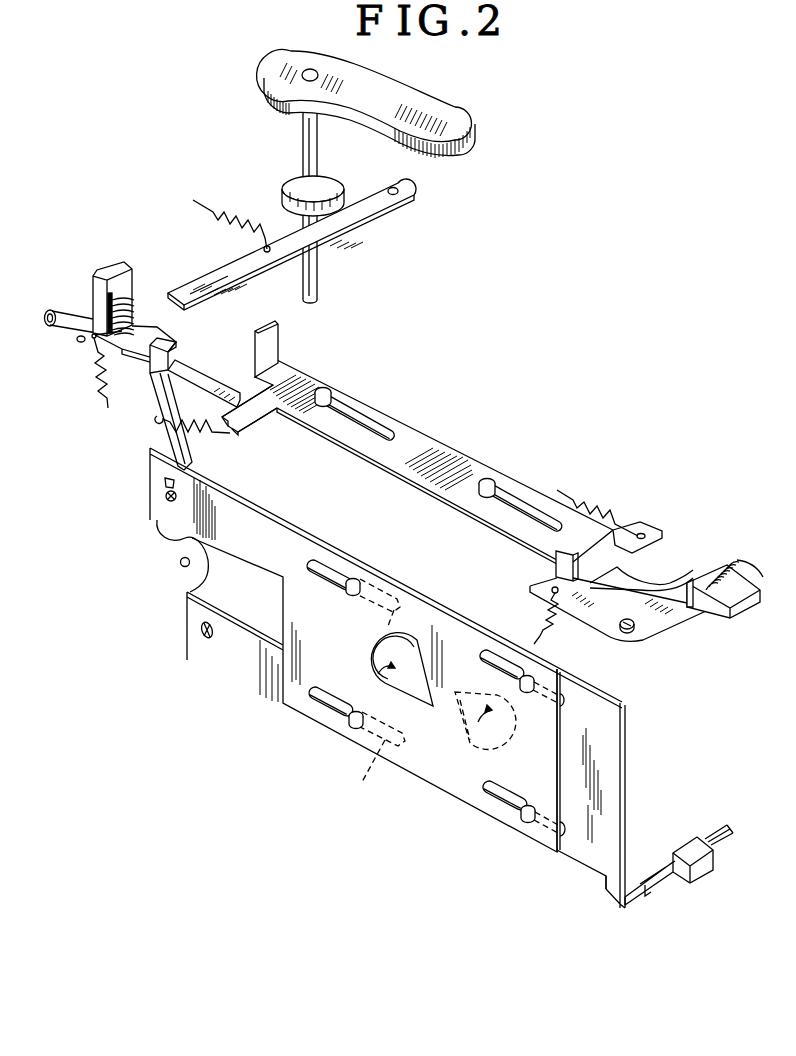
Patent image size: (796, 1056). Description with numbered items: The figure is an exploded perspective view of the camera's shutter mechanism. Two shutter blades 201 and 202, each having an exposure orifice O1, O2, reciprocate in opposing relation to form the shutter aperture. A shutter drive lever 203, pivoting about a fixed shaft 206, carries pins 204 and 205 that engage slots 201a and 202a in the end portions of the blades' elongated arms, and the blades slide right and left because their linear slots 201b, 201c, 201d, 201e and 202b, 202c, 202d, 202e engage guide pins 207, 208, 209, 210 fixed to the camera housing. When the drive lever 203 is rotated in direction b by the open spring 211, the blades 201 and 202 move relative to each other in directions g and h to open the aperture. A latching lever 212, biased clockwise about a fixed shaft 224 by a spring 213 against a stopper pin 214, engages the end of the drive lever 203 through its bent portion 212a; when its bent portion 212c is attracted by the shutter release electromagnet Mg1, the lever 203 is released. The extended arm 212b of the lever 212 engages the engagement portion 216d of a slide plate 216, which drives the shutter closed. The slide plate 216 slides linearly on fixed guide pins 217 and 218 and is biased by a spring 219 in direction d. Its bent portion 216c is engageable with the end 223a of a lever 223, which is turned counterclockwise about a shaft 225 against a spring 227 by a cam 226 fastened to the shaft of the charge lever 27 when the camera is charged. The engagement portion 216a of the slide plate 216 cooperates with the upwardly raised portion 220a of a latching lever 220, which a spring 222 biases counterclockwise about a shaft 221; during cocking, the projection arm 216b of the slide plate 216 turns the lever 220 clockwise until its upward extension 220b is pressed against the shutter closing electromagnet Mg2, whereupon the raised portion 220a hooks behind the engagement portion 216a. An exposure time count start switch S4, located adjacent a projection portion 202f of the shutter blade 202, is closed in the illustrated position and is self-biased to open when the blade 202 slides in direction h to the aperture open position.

The charge lever 27 is at (283, 70).
The cam 226 is at (296, 178).
The shaft 225 is at (400, 189).
The spring 227 is at (238, 228).
The lever 223 is at (385, 215).
The end of lever 223 223a is at (200, 291).
The fixed shaft 224 is at (48, 312).
The electromagnet Mg1 is at (109, 268).
The latching lever 212 is at (85, 322).
The bent portion 212a is at (217, 345).
The extended arm portion 212b is at (192, 440).
The bent portion 212c is at (133, 360).
The stopper pin 214 is at (80, 343).
The spring 213 is at (104, 384).
The open spring 211 is at (196, 432).
The slide plate 216 is at (438, 450).
The engagement portion 216a is at (590, 572).
The projection arm 216b is at (668, 572).
The bent portion 216c is at (270, 351).
The engagement portion 216d is at (255, 405).
The fixed guide pin 217 is at (328, 391).
The fixed guide pin 218 is at (491, 479).
The spring 219 is at (590, 503).
The latching lever 220 is at (672, 616).
The upwardly raised portion 220a is at (556, 567).
The upwardly raised portion 220b is at (722, 566).
The shaft 221 is at (631, 632).
The spring 222 is at (547, 614).
The shutter closing electromagnet Mg2 is at (738, 608).
The shutter blade 201 is at (416, 760).
The slot 201a is at (165, 481).
The linear slot 201b is at (328, 566).
The linear slot 201c is at (325, 704).
The linear slot 201d is at (497, 657).
The linear slot 201e is at (490, 792).
The shutter blade 202 is at (580, 848).
The slot 202a is at (207, 640).
The linear slot 202b is at (394, 597).
The linear slot 202c is at (376, 755).
The linear slot 202d is at (570, 705).
The linear slot 202e is at (572, 824).
The projection portion 202f is at (612, 891).
The shutter drive lever 203 is at (197, 578).
The pin 204 is at (205, 640).
The pin 205 is at (166, 496).
The fixed shaft 206 is at (180, 562).
The guide pin 207 is at (358, 580).
The guide pin 208 is at (356, 723).
The guide pin 209 is at (529, 690).
The guide pin 210 is at (523, 818).
The exposure orifice O1 is at (372, 672).
The exposure orifice O2 is at (470, 735).
The exposure time count start switch S4 is at (675, 877).